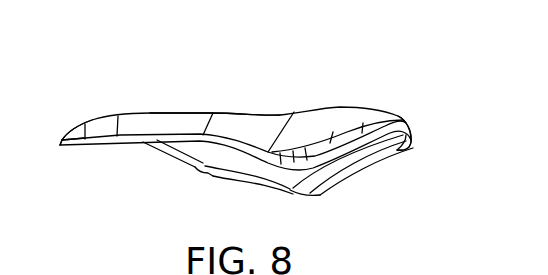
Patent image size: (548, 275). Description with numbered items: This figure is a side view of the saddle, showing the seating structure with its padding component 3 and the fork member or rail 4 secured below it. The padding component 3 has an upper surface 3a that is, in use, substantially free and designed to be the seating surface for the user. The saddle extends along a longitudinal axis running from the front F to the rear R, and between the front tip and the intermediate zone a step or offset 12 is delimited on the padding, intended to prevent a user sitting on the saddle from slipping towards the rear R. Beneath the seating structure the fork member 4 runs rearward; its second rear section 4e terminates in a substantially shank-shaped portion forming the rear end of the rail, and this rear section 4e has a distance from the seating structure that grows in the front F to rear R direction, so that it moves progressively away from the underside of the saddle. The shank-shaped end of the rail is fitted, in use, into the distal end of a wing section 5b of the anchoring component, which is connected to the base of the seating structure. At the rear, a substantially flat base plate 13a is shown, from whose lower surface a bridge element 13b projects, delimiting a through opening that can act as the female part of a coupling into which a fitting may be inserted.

The padding component 3 is at (152, 117).
The upper surface 3a is at (235, 115).
The step or offset 12 is at (282, 113).
The rear R is at (400, 118).
The front F is at (63, 138).
The fork member or rail 4 is at (170, 151).
The second rear section 4e is at (222, 180).
The wing section 5b is at (331, 189).
The base plate 13a is at (404, 150).
The bridge element 13b is at (368, 160).